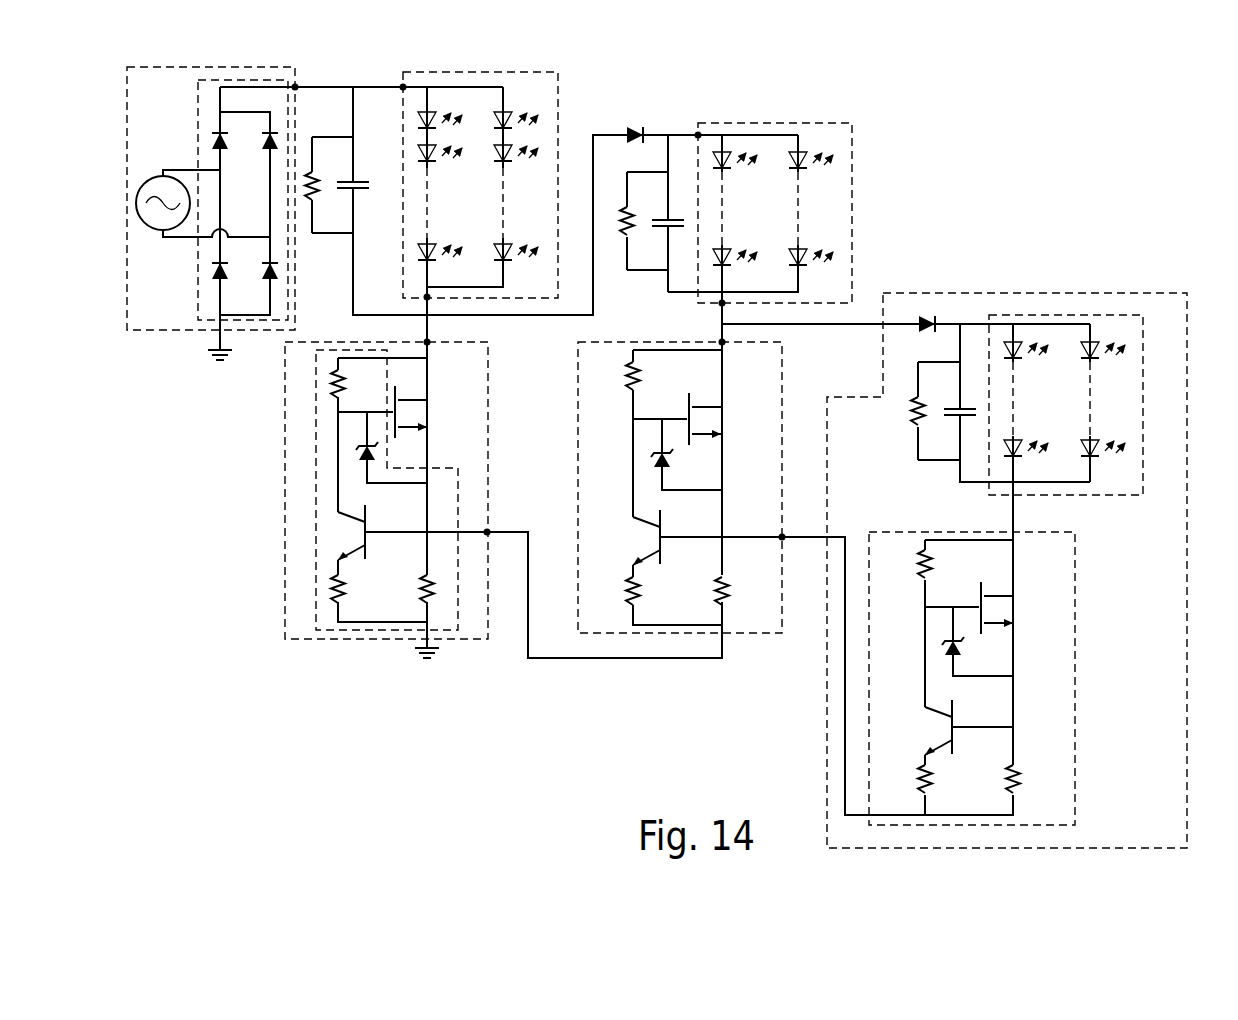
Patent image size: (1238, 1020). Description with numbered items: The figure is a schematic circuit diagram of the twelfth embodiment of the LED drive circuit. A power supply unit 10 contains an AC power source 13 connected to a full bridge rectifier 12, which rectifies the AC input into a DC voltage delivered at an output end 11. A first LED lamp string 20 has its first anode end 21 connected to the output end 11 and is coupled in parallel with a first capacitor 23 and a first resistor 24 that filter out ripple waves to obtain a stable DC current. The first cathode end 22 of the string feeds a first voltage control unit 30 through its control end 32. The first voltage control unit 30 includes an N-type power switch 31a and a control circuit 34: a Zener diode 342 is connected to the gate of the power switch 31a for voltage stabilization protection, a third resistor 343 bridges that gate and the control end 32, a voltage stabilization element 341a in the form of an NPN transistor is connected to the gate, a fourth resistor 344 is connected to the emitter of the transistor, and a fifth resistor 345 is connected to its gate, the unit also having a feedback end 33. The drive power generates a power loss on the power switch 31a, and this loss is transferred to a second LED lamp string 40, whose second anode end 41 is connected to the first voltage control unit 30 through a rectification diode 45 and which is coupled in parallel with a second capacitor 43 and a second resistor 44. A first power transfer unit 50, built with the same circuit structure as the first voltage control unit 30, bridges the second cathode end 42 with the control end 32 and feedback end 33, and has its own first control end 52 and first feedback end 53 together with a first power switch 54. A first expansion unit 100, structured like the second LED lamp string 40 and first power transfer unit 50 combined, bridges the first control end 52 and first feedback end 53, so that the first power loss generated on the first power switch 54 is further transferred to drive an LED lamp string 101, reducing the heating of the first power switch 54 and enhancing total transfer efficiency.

The power supply unit 10 is at (124, 98).
The full bridge rectifier 12 is at (198, 113).
The AC power source 13 is at (146, 226).
The output end 11 is at (297, 88).
The first anode end 21 is at (402, 87).
The first capacitor 23 is at (357, 182).
The first resistor 24 is at (311, 206).
The first LED lamp string 20 is at (560, 98).
The first cathode end 22 is at (430, 298).
The control end 32 is at (425, 342).
The power switch 31a is at (430, 418).
The first voltage control unit 30 is at (282, 460).
The control circuit 34 is at (316, 518).
The Zener diode 342 is at (365, 462).
The third resistor 343 is at (338, 397).
The voltage stabilization element 341a is at (335, 535).
The fourth resistor 344 is at (336, 608).
The fifth resistor 345 is at (425, 608).
The feedback end 33 is at (488, 532).
The rectification diode 45 is at (633, 127).
The second anode end 41 is at (697, 135).
The second LED lamp string 40 is at (801, 121).
The second resistor 44 is at (625, 238).
The second capacitor 43 is at (664, 230).
The second cathode end 42 is at (720, 305).
The first control end 52 is at (725, 343).
The first power switch 54 is at (720, 421).
The first power transfer unit 50 is at (575, 481).
The first feedback end 53 is at (784, 536).
The first expansion unit 100 is at (1072, 290).
The LED lamp string 101 is at (1149, 403).